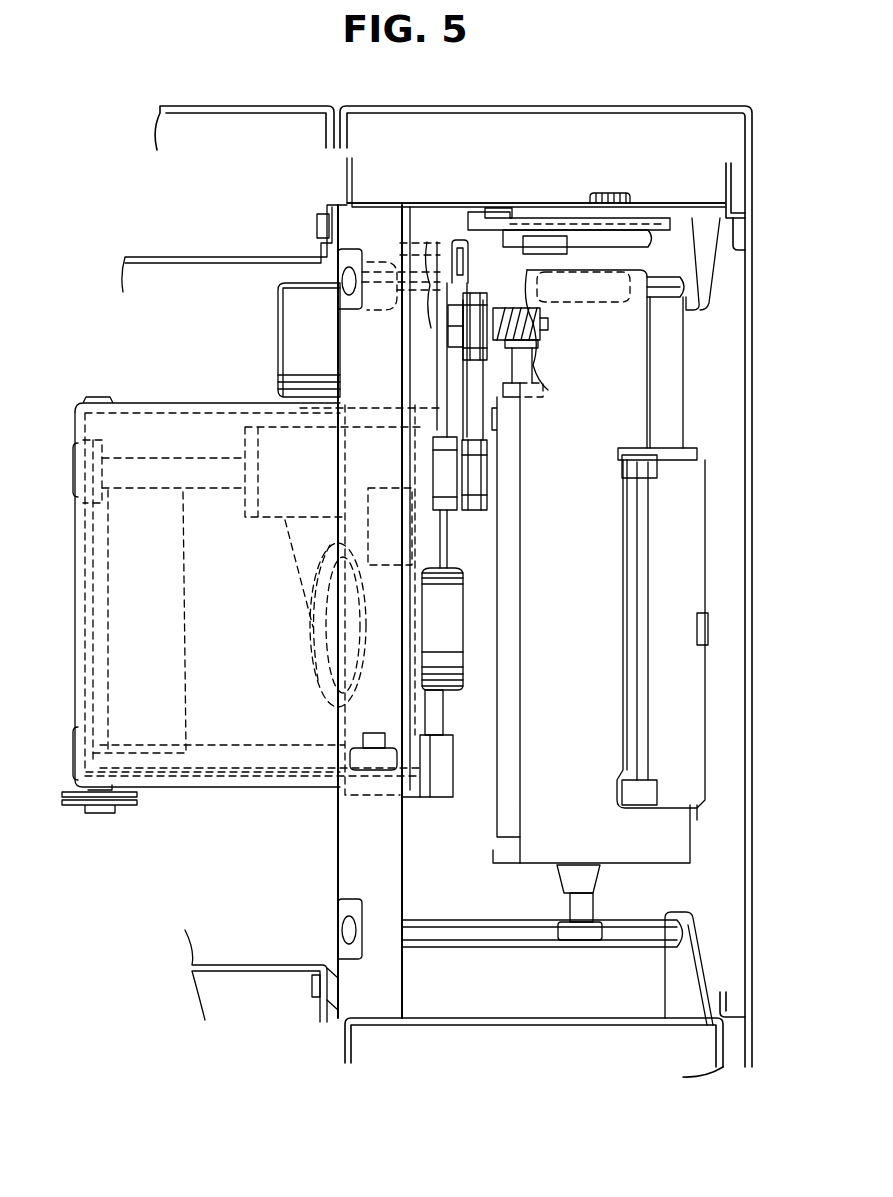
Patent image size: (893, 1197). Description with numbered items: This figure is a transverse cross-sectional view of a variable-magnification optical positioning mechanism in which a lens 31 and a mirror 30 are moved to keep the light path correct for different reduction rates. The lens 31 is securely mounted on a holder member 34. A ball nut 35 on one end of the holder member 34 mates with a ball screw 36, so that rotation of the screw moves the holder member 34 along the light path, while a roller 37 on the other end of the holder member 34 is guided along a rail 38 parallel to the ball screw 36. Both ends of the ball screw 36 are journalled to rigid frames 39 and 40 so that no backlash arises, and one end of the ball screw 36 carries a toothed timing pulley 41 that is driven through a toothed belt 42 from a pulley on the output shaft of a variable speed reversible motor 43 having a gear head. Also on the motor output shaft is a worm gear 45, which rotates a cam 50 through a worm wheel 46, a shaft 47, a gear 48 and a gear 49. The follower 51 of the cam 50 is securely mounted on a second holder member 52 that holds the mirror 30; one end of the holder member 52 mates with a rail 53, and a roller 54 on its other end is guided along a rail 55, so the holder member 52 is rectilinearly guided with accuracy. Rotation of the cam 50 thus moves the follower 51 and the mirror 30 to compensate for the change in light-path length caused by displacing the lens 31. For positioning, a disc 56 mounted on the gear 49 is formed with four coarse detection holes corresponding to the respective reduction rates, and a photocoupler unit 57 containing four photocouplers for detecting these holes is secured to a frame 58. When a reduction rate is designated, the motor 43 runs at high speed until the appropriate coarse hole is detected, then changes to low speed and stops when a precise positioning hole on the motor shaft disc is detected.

The mirror 30 is at (700, 455).
The lens 31 is at (460, 660).
The holder member 34 is at (290, 530).
The ball nut 35 is at (245, 447).
The ball screw 36 is at (160, 458).
The roller 37 is at (338, 750).
The rail 38 is at (253, 745).
The rigid frame 39 is at (75, 400).
The rigid frame 40 is at (440, 545).
The toothed pulley 41 is at (480, 512).
The toothed belt 42 is at (490, 372).
The variable speed reversible motor 43 is at (278, 302).
The worm gear 45 is at (540, 335).
The worm wheel 46 is at (548, 323).
The shaft 47 is at (525, 352).
The gear 48 is at (480, 208).
The gear 49 is at (640, 235).
The cam 50 is at (676, 252).
The follower 51 is at (583, 287).
The holder member 52 is at (648, 395).
The rail 53 is at (672, 300).
The roller 54 is at (555, 925).
The rail 55 is at (622, 948).
The disc 56 is at (522, 212).
The photocoupler unit 57 is at (467, 218).
The frame 58 is at (430, 201).